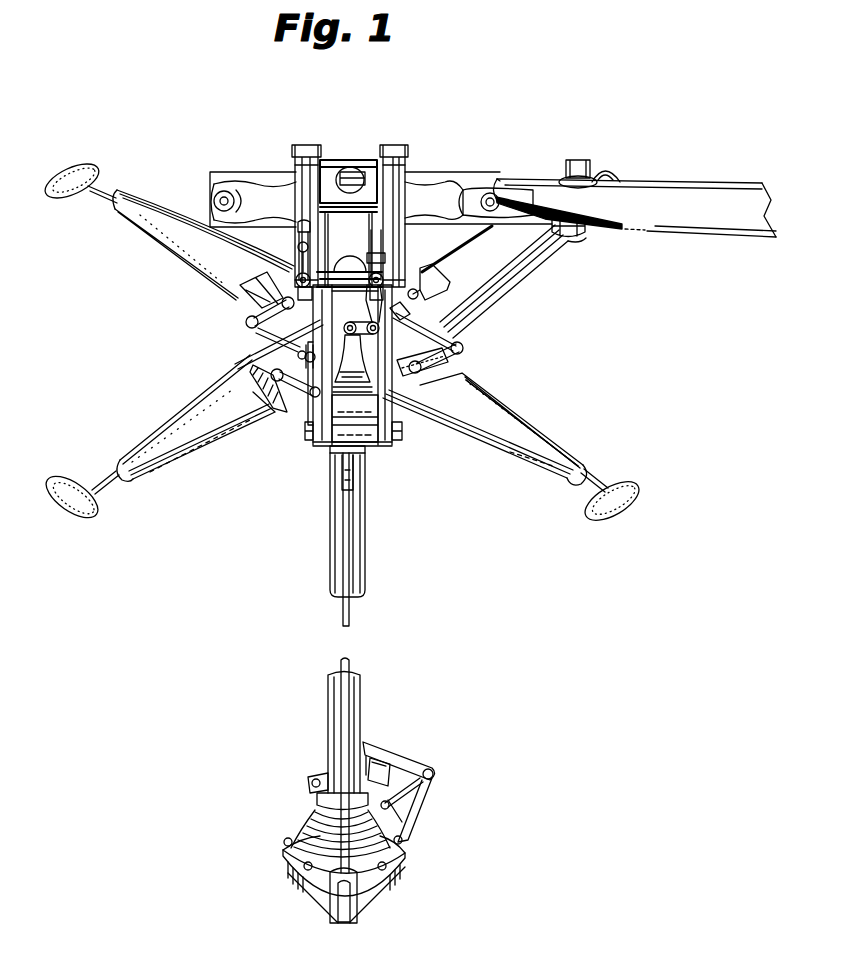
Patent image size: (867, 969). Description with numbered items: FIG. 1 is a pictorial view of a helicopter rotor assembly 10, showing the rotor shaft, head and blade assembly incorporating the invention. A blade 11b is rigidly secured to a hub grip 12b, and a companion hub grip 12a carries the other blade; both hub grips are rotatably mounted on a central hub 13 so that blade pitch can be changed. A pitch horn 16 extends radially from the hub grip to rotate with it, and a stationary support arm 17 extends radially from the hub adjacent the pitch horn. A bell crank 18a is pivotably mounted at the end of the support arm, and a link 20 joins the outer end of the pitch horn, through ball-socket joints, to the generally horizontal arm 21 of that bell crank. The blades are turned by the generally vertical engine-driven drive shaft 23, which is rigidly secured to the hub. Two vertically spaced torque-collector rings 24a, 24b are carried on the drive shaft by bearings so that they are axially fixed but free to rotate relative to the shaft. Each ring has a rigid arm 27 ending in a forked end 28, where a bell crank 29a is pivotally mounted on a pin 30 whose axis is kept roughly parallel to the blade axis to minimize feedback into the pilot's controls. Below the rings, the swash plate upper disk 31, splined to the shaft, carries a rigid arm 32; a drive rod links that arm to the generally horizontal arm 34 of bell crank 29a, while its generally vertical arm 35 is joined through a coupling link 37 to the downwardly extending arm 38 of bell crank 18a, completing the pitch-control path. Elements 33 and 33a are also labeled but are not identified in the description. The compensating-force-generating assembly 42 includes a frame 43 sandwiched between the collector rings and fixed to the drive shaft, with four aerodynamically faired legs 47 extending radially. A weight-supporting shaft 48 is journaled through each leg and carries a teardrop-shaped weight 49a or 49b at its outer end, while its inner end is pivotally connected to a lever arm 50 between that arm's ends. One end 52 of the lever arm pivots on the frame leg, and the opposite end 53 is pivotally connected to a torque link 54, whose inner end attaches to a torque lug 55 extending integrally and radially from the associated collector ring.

The helicopter rotor assembly 10 is at (507, 176).
The blade 11b is at (716, 182).
The hub grip 12a is at (256, 172).
The hub grip 12b is at (440, 172).
The central hub 13 is at (358, 160).
The pitch horn 16 is at (292, 226).
The stationary support arm 17 is at (370, 228).
The bell crank 18a is at (390, 268).
The link 20 is at (296, 264).
The generally horizontal arm 21 is at (340, 266).
The drive shaft 23 is at (366, 550).
The torque-collector ring 24a is at (325, 332).
The torque-collector ring 24b is at (388, 398).
The rigid arm 27 is at (395, 400).
The forked end 28 is at (322, 447).
The bell crank 29a is at (374, 455).
The pin 30 is at (308, 432).
The upper disk 31 is at (402, 882).
The rigid arm 32 is at (335, 908).
The control rod 33 is at (340, 738).
The control rod upper portion 33a is at (342, 552).
The generally horizontal arm 34 is at (338, 470).
The generally vertical arm 35 is at (370, 390).
The coupling link 37 is at (362, 328).
The downwardly extending arm 38 is at (418, 296).
The compensating-force-generating assembly 42 is at (501, 396).
The frame 43 is at (493, 393).
The aerodynamically faired legs 47 is at (128, 232).
The weight-supporting shaft 48 is at (114, 186).
The teardrop-shaped weight 49a is at (616, 174).
The teardrop-shaped weight 49b is at (80, 168).
The lever arm 50 is at (254, 318).
The lever arm end 52 is at (244, 282).
The lever arm opposite end 53 is at (246, 322).
The torque link 54 is at (258, 334).
The torque lug 55 is at (292, 341).